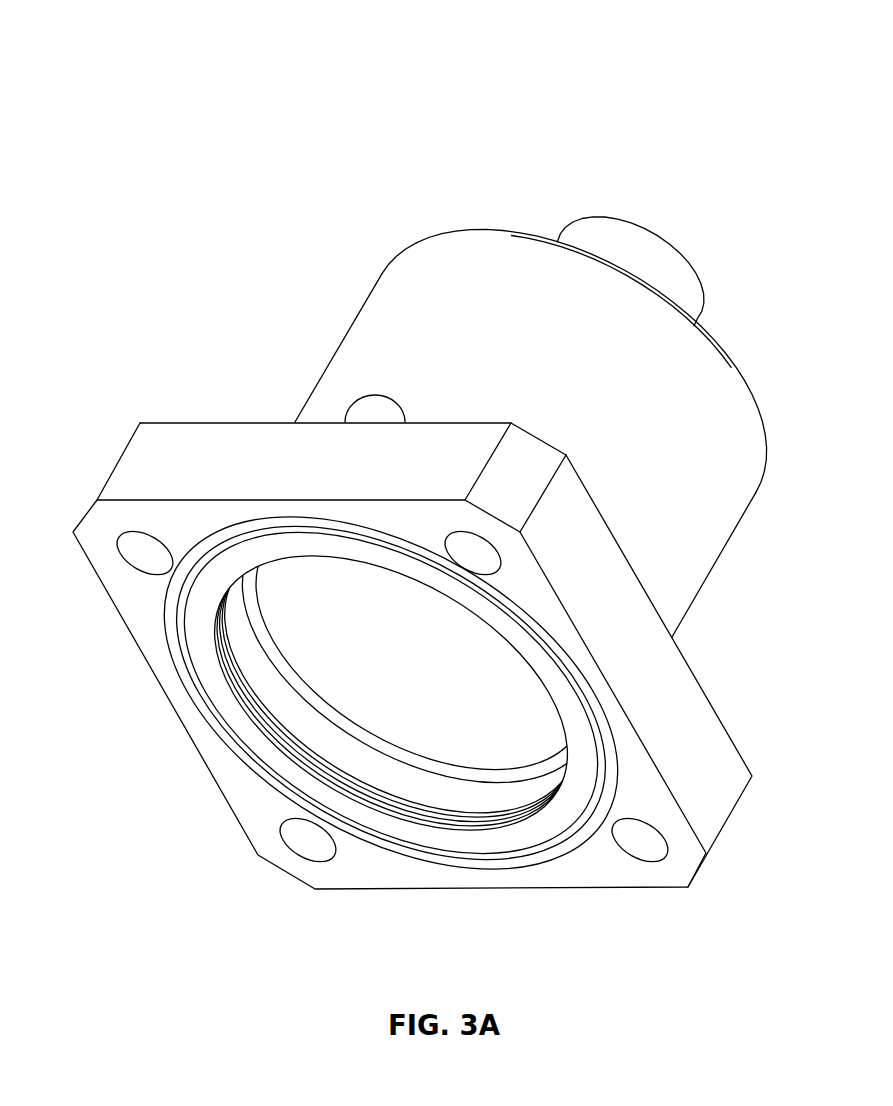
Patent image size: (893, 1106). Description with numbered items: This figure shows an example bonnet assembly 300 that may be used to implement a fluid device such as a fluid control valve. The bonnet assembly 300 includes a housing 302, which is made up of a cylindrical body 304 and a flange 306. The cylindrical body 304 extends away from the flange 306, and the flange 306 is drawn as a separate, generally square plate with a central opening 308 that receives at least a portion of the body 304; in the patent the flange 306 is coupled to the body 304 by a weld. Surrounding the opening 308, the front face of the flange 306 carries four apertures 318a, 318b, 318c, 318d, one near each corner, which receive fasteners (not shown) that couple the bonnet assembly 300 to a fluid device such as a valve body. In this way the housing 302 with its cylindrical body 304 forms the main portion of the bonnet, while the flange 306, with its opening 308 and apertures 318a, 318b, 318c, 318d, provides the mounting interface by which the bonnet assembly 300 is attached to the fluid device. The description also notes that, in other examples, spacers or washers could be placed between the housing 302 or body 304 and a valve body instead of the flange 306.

The bonnet assembly 300 is at (232, 100).
The housing 302 is at (210, 338).
The cylindrical body 304 is at (385, 310).
The flange 306 is at (137, 467).
The opening 308 is at (192, 685).
The aperture 318a is at (148, 557).
The aperture 318b is at (308, 842).
The aperture 318c is at (480, 550).
The aperture 318d is at (640, 840).